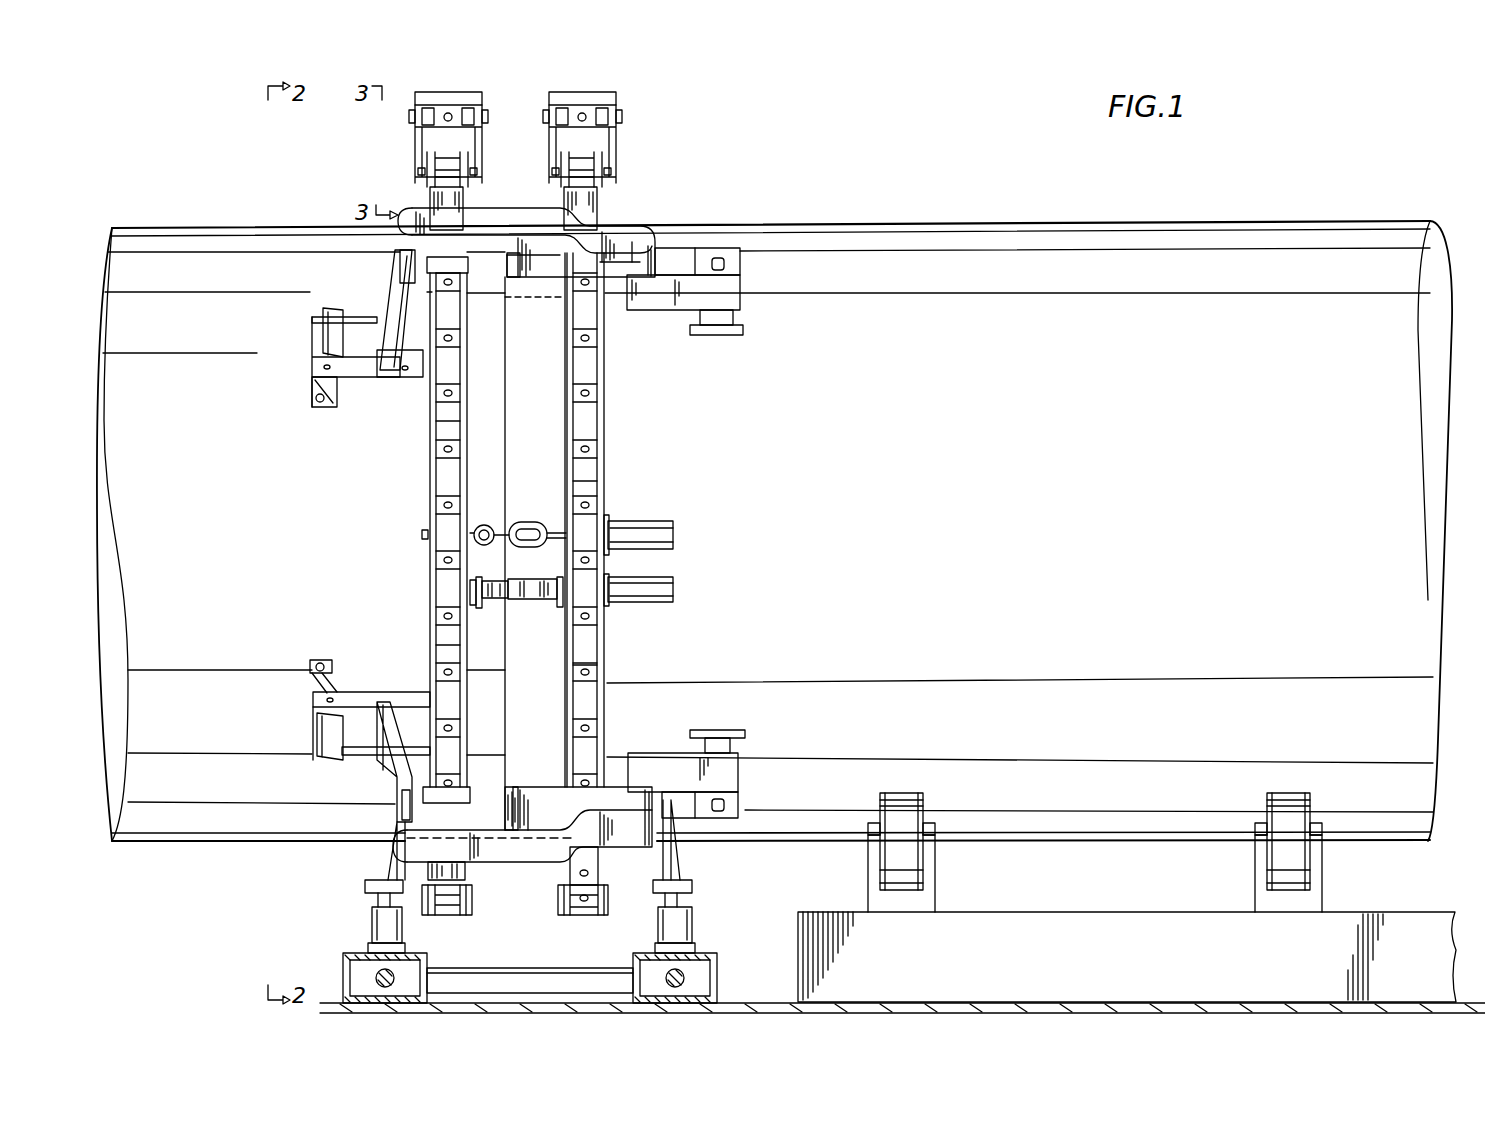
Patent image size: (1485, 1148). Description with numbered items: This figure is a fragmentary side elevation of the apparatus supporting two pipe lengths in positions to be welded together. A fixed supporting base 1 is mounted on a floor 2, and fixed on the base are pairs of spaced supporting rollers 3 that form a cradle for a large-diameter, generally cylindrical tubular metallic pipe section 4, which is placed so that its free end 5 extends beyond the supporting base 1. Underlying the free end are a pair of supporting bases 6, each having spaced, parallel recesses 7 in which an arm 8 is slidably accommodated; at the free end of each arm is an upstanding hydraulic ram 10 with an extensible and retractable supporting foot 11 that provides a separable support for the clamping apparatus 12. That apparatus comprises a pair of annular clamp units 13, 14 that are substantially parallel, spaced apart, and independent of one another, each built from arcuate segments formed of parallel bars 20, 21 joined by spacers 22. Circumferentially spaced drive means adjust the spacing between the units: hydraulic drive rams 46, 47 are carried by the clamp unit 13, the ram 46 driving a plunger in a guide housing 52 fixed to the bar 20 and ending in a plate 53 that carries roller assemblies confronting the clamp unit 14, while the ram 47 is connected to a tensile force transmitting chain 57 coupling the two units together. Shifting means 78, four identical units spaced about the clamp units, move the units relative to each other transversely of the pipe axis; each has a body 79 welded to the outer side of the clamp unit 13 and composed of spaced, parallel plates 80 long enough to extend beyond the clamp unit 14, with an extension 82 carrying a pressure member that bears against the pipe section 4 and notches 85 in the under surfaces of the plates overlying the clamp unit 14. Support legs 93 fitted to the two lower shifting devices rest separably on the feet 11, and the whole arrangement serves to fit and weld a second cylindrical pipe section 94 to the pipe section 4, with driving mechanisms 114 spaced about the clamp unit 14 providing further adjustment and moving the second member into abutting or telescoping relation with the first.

The supporting base 1 is at (798, 926).
The floor 2 is at (765, 1003).
The supporting rollers 3 is at (925, 872).
The pipe section 4 is at (872, 226).
The free end 5 is at (500, 478).
The supporting bases 6 is at (548, 968).
The recesses 7 is at (425, 958).
The arm 8 is at (638, 262).
The hydraulic ram 10 is at (372, 924).
The supporting foot 11 is at (365, 888).
The clamping apparatus 12 is at (518, 156).
The clamp unit 13 is at (630, 410).
The clamp unit 14 is at (417, 460).
The bar 20 is at (565, 488).
The bar 21 is at (468, 427).
The spacers 22 is at (440, 640).
The hydraulic drive ram 46 is at (667, 595).
The hydraulic drive ram 47 is at (667, 533).
The guide housing 52 is at (540, 602).
The plate 53 is at (495, 605).
The tensile force transmitting chain 57 is at (528, 546).
The shifting means 78 is at (745, 285).
The body 79 is at (533, 208).
The plates 80 is at (625, 797).
The extension 82 is at (660, 296).
The notches 85 is at (513, 265).
The support legs 93 is at (385, 868).
The pipe section 94 is at (216, 251).
The driving mechanisms 114 is at (294, 397).